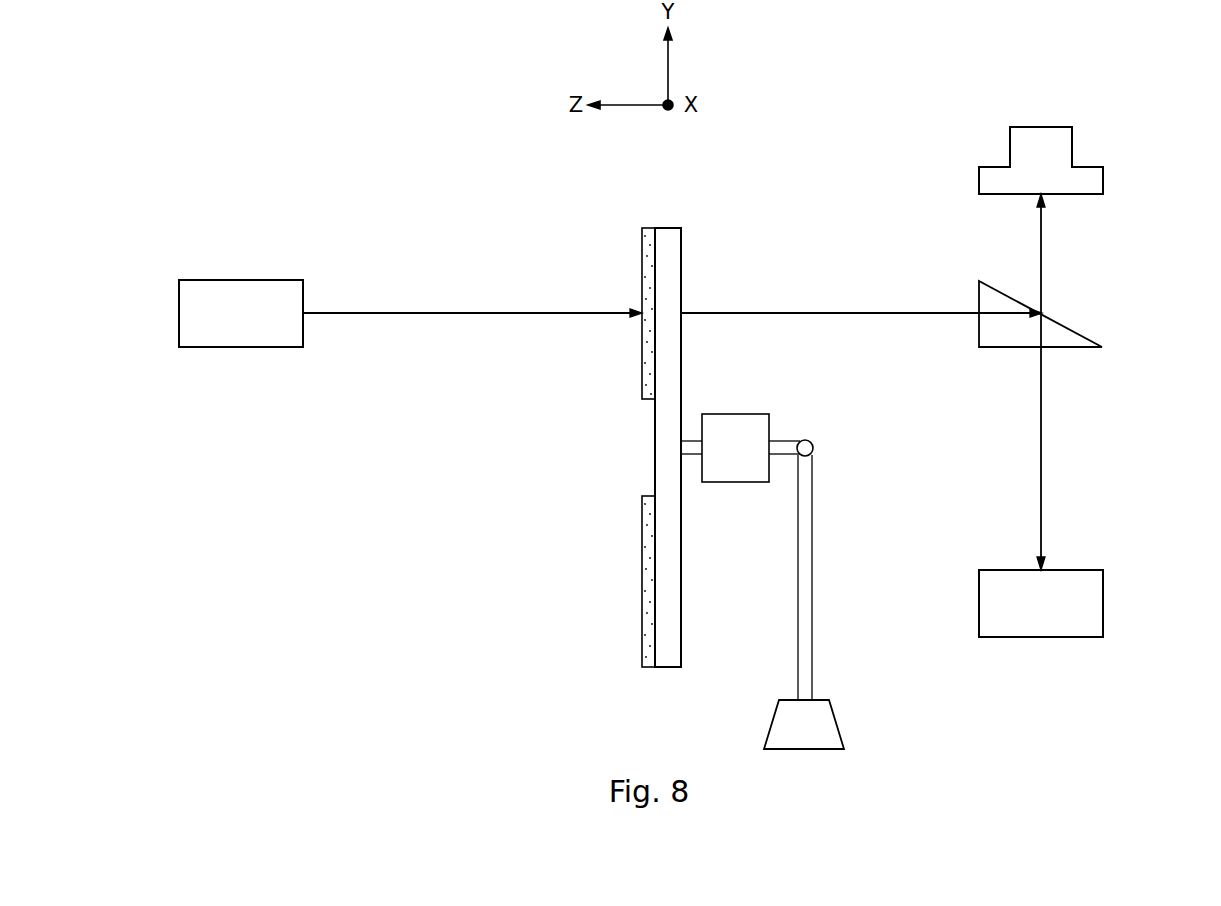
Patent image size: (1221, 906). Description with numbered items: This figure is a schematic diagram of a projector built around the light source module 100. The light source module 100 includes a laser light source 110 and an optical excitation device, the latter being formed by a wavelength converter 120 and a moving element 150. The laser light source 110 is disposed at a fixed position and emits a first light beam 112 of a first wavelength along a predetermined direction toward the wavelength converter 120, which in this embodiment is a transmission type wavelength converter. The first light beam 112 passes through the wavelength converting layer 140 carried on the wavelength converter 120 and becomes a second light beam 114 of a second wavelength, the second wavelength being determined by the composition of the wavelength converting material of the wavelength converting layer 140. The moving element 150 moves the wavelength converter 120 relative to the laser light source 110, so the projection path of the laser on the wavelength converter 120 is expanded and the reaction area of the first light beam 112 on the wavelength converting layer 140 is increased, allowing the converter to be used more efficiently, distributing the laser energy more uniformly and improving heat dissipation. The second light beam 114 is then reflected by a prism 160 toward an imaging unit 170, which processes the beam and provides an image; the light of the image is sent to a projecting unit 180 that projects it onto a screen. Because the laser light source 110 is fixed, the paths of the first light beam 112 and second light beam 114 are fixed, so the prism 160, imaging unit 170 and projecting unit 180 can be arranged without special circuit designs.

The light source module 100 is at (142, 57).
The laser light source 110 is at (240, 280).
The first light beam 112 is at (438, 313).
The second light beam 114 is at (773, 313).
The wavelength converter 120 is at (668, 212).
The wavelength converting layer 140 is at (642, 268).
The moving element 150 is at (813, 573).
The prism 160 is at (1067, 327).
The imaging unit 170 is at (1103, 602).
The projecting unit 180 is at (1072, 145).